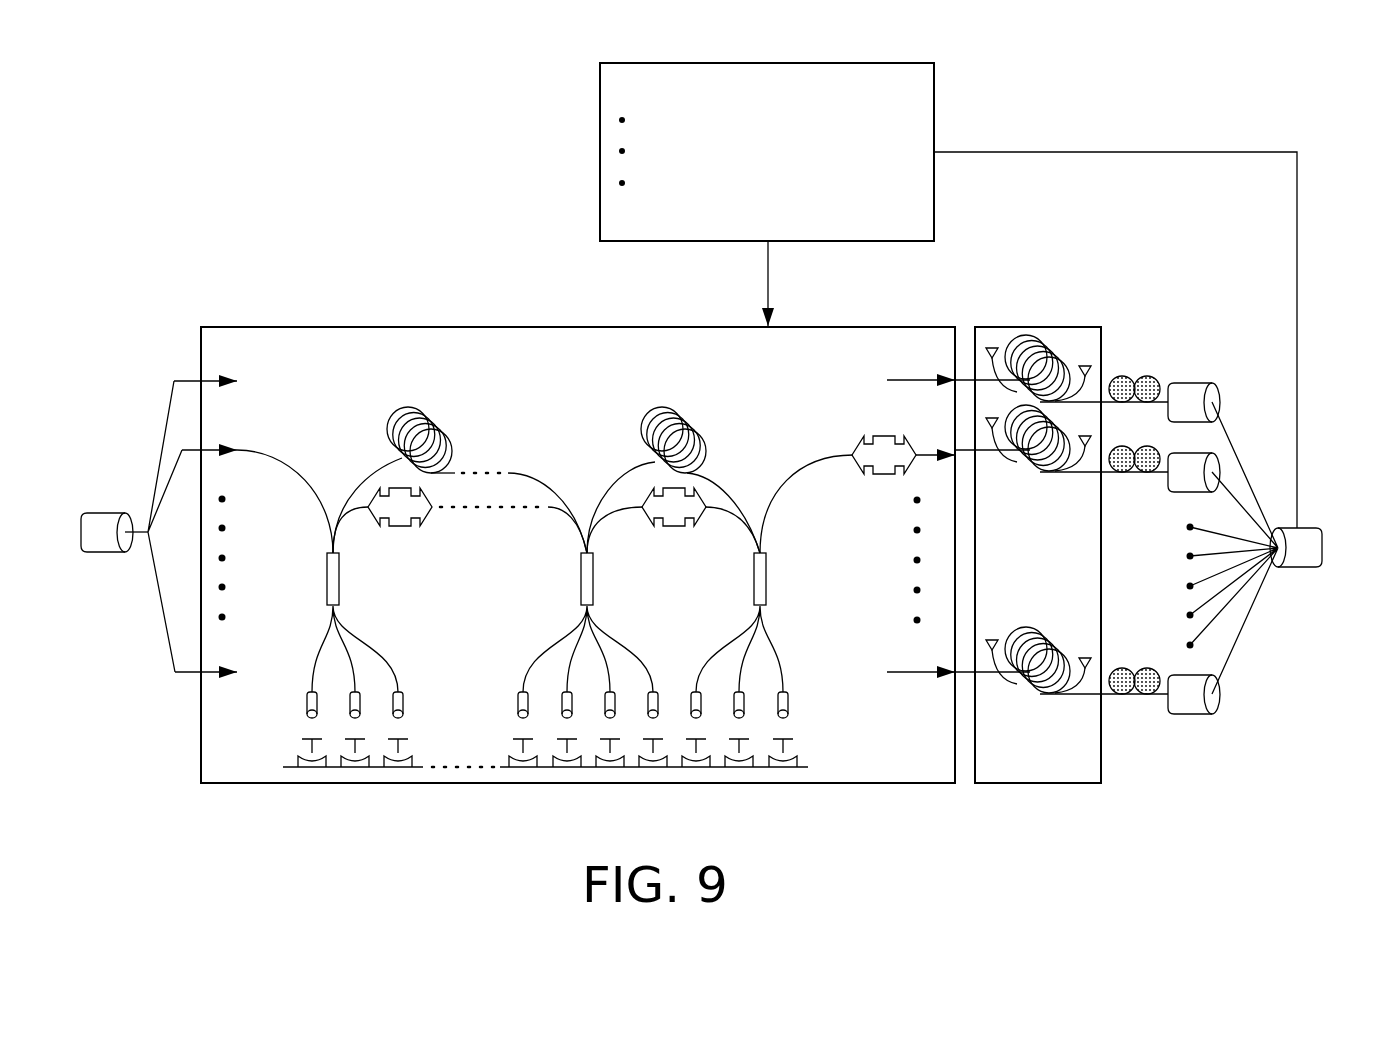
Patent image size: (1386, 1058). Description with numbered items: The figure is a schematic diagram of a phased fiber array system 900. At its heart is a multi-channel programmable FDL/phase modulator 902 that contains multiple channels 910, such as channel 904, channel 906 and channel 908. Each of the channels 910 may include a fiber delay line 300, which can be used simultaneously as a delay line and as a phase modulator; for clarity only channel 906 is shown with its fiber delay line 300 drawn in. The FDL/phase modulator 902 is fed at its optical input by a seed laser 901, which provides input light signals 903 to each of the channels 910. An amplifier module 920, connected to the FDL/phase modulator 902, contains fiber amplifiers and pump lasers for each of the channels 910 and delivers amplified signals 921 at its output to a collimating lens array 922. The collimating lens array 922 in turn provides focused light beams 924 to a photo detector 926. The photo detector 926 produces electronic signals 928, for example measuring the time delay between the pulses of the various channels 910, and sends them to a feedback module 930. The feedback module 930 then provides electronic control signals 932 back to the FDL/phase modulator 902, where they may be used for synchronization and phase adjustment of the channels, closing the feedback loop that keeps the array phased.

The phased fiber array system 900 is at (262, 121).
The seed laser 901 is at (98, 553).
The multi-channel programmable FDL/phase modulator 902 is at (500, 327).
The input light signals 903 is at (158, 431).
The channel 904 is at (225, 377).
The channel 906 is at (226, 446).
The channel 908 is at (218, 676).
The channels 910 is at (208, 353).
The fiber delay line 300 is at (481, 441).
The amplifier module 920 is at (1018, 785).
The amplified signals 921 is at (1129, 708).
The collimating lens array 922 is at (1223, 723).
The focused light beams 924 is at (1249, 641).
The photo detector 926 is at (1307, 570).
The electronic signals 928 is at (1297, 231).
The feedback module 930 is at (600, 128).
The electronic control signals 932 is at (768, 278).